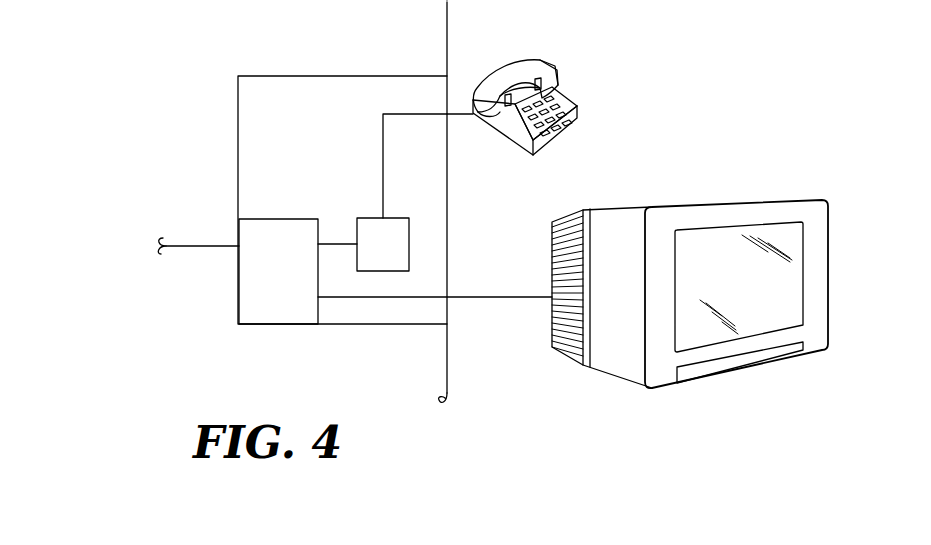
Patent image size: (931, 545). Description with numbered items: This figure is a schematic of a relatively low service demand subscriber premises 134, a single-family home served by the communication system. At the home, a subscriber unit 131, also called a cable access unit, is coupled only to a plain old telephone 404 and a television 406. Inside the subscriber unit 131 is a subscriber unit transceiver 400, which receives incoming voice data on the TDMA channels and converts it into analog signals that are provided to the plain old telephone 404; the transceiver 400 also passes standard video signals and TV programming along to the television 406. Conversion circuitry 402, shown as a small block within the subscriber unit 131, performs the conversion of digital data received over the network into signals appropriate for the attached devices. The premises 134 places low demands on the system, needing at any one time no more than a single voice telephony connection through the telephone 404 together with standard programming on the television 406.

The subscriber unit 131 is at (318, 74).
The subscriber premises 134 is at (297, 389).
The subscriber unit transceiver 400 is at (247, 315).
The conversion circuitry 402 is at (360, 217).
The plain old telephone 404 is at (566, 100).
The television 406 is at (658, 205).